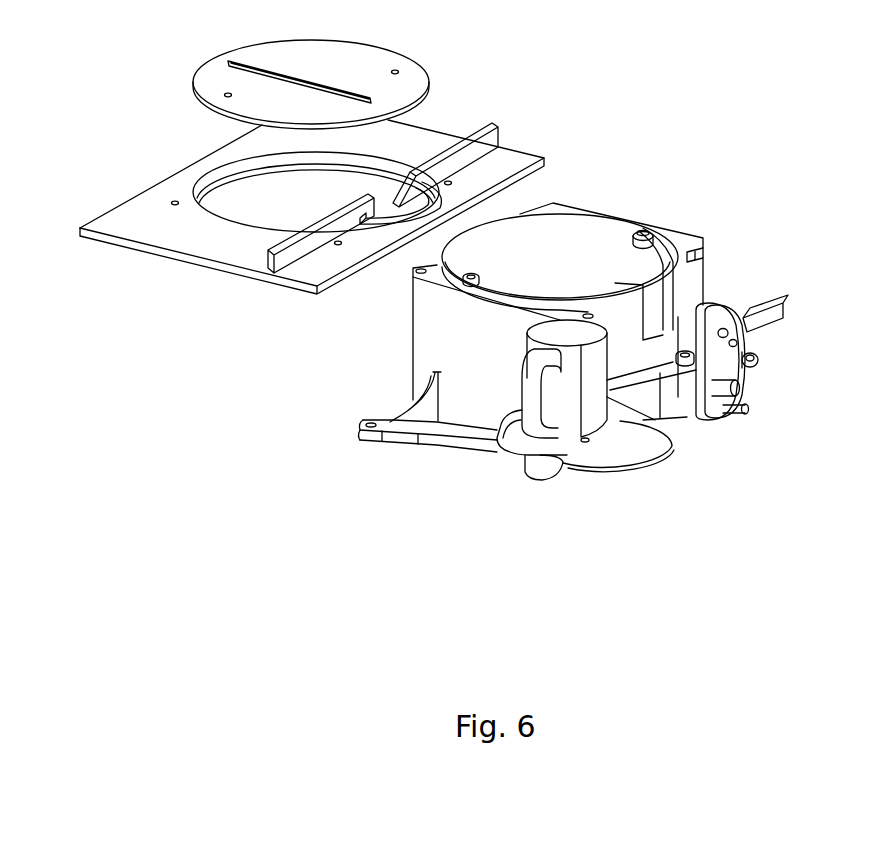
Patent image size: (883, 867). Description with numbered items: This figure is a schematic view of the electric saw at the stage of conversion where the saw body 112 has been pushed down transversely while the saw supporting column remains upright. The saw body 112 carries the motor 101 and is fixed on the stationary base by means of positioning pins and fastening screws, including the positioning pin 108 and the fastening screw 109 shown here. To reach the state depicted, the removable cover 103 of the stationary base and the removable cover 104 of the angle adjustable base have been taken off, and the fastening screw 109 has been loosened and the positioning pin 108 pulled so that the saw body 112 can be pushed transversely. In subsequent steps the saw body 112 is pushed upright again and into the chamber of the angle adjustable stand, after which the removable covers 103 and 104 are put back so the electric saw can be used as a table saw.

The motor 101 is at (560, 397).
The removable cover of the stationary base 103 is at (503, 160).
The removable cover of the angle adjustable base 104 is at (409, 84).
The positioning pin 108 is at (740, 318).
The fastening screw 109 is at (742, 351).
The saw body 112 is at (505, 448).